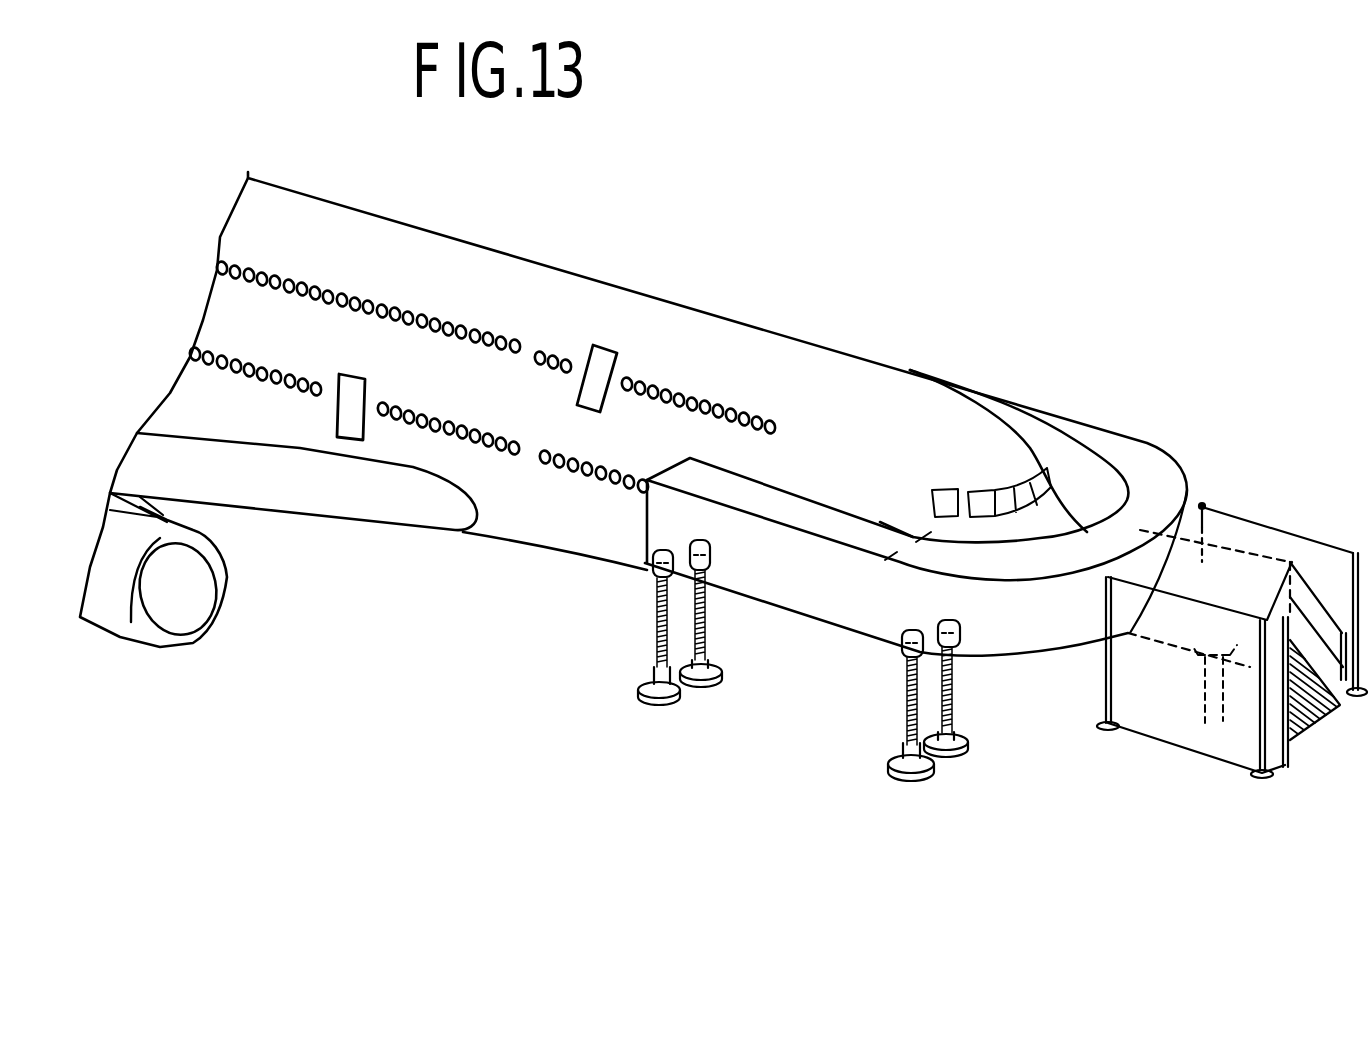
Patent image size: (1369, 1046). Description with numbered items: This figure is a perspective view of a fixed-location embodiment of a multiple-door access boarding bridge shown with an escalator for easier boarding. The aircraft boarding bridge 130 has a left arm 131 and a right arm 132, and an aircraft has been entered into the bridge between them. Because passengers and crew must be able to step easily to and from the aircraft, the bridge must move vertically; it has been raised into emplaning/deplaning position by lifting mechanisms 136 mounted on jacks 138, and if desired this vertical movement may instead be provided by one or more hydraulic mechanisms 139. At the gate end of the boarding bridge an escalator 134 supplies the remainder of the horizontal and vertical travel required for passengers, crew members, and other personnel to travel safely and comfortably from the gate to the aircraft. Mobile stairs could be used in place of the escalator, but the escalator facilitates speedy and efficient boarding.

The aircraft boarding bridge 130 is at (1170, 452).
The left arm 131 is at (1033, 410).
The right arm 132 is at (823, 597).
The escalator 134 is at (1323, 705).
The lifting mechanisms 136 is at (710, 562).
The jacks 138 is at (657, 637).
The hydraulic mechanisms 139 is at (1190, 737).